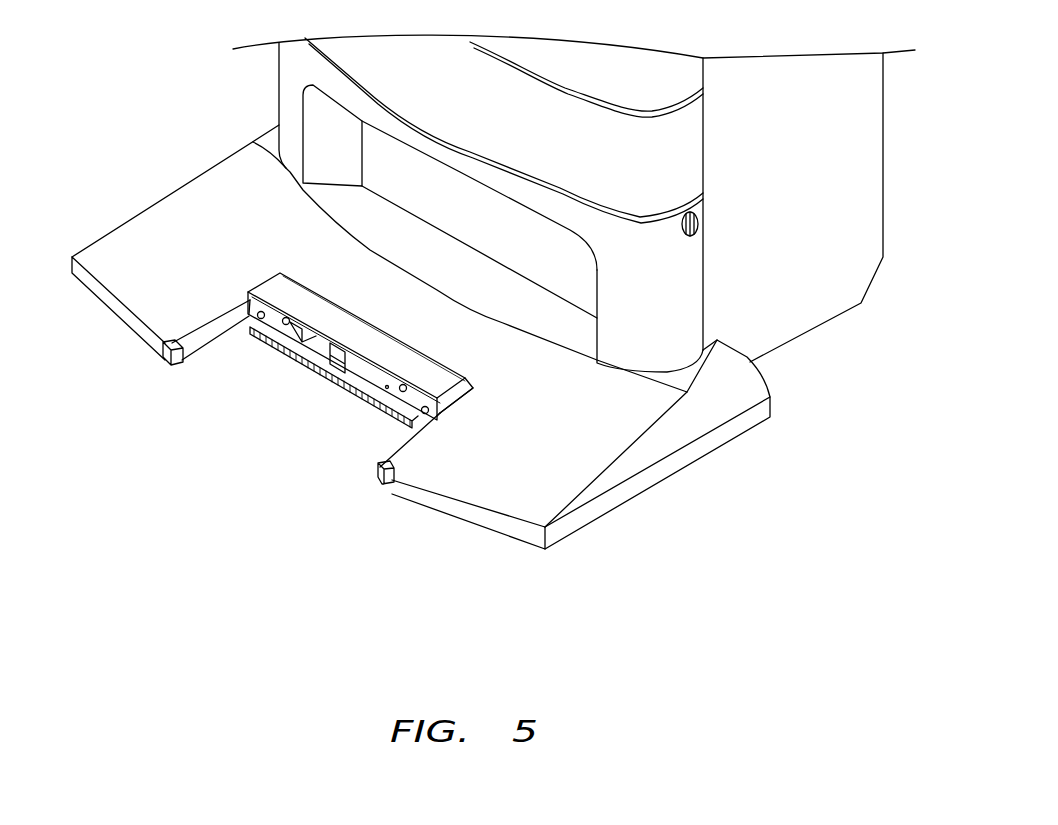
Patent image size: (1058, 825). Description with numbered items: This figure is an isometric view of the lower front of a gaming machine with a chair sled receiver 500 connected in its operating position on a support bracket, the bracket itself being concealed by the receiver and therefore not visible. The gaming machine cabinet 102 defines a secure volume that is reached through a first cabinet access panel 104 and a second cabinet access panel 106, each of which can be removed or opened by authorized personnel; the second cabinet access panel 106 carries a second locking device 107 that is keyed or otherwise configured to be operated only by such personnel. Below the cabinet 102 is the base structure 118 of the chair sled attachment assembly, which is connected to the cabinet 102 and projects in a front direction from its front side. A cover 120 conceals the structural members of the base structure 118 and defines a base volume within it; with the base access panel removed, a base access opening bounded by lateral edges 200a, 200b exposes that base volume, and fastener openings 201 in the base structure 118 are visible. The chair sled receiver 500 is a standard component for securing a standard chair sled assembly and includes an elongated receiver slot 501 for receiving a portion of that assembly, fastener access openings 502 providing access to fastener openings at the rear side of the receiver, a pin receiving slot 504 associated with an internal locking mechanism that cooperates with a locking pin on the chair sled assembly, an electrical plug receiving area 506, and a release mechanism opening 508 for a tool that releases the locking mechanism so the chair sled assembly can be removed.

The cabinet 102 is at (865, 115).
The first cabinet access panel 104 is at (667, 150).
The second cabinet access panel 106 is at (667, 283).
The second locking device 107 is at (703, 225).
The base structure 118 is at (125, 170).
The cover 120 is at (578, 458).
The fastener openings 201 is at (167, 362).
The lateral edge 200a is at (232, 310).
The lateral edge 200b is at (427, 413).
The chair sled receiver 500 is at (347, 363).
The elongated receiver slot 501 is at (367, 400).
The fastener access openings 502 is at (252, 338).
The pin receiving slot 504 is at (345, 382).
The electrical plug receiving area 506 is at (333, 360).
The release mechanism opening 508 is at (383, 347).